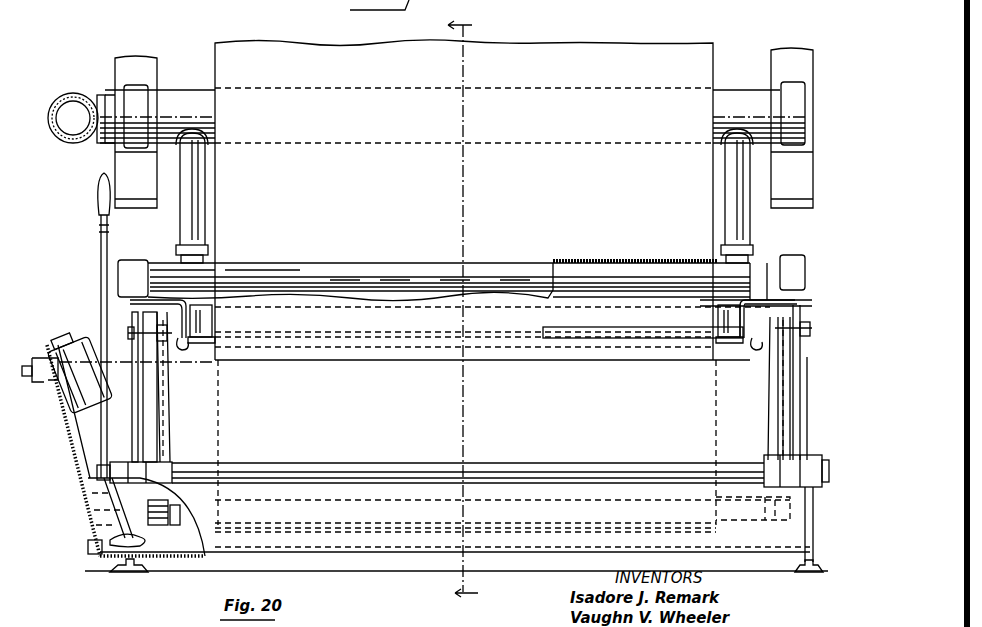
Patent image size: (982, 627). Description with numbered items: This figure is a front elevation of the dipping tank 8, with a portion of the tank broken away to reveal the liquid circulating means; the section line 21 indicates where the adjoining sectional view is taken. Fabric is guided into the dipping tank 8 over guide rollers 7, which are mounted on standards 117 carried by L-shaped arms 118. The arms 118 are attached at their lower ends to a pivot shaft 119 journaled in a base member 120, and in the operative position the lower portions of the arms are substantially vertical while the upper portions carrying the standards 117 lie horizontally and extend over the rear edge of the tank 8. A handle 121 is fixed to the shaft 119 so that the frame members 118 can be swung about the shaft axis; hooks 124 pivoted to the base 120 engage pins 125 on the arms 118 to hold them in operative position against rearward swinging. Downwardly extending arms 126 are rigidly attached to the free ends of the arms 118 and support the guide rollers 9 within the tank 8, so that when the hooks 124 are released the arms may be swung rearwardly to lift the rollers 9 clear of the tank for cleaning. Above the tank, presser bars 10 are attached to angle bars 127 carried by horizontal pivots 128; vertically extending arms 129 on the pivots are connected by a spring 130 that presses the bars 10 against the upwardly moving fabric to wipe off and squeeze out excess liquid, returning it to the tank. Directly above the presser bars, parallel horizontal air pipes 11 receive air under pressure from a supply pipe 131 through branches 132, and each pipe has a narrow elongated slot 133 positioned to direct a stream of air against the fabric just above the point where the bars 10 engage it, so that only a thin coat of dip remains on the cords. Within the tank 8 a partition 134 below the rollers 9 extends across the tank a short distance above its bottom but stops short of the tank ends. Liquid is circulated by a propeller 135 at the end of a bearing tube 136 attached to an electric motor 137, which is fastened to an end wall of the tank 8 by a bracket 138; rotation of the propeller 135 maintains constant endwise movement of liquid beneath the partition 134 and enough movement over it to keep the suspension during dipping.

The guide rollers 7 is at (620, 262).
The dipping tank 8 is at (378, 552).
The guide rollers 9 is at (345, 498).
The presser bars 10 is at (325, 262).
The air pipes 11 is at (490, 262).
The section line 21 is at (480, 314).
The standards 117 is at (757, 270).
The L-shaped arms 118 is at (163, 445).
The pivot shaft 119 is at (505, 464).
The base member 120 is at (150, 565).
The handle 121 is at (98, 218).
The hooks 124 is at (139, 381).
The pins 125 is at (128, 333).
The downwardly extending arms 126 is at (165, 430).
The angle bars 127 is at (322, 345).
The horizontal pivots 128 is at (185, 350).
The vertically extending arms 129 is at (213, 320).
The spring 130 is at (208, 312).
The supply pipe 131 is at (186, 92).
The branches 132 is at (207, 187).
The elongated slot 133 is at (362, 280).
The partition 134 is at (170, 526).
The propeller 135 is at (110, 540).
The bearing tube 136 is at (92, 500).
The electric motor 137 is at (52, 332).
The bracket 138 is at (46, 390).